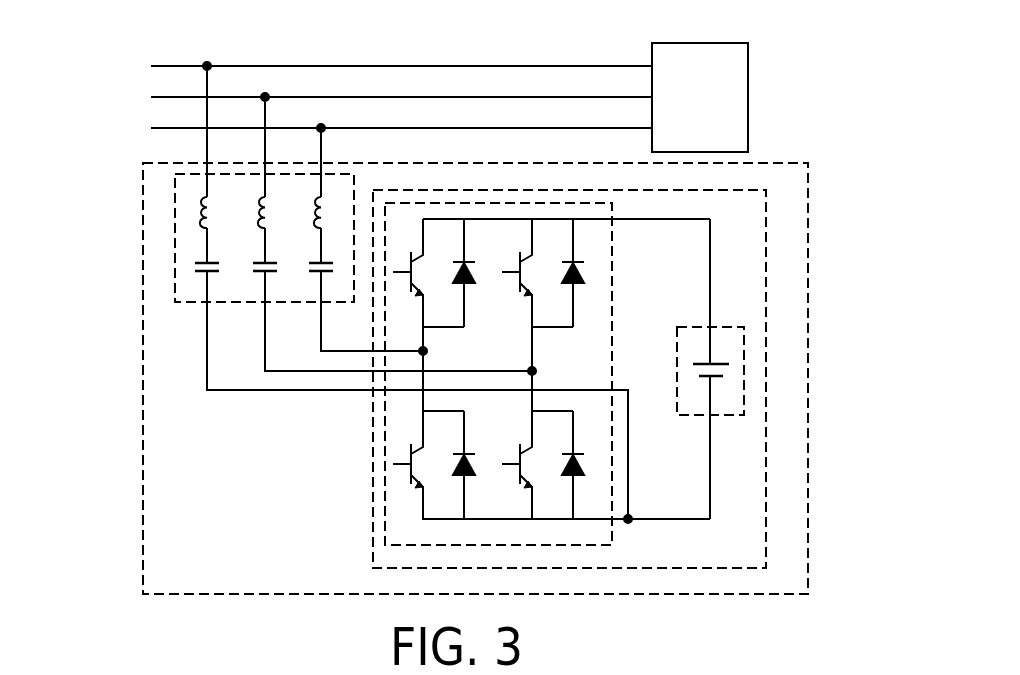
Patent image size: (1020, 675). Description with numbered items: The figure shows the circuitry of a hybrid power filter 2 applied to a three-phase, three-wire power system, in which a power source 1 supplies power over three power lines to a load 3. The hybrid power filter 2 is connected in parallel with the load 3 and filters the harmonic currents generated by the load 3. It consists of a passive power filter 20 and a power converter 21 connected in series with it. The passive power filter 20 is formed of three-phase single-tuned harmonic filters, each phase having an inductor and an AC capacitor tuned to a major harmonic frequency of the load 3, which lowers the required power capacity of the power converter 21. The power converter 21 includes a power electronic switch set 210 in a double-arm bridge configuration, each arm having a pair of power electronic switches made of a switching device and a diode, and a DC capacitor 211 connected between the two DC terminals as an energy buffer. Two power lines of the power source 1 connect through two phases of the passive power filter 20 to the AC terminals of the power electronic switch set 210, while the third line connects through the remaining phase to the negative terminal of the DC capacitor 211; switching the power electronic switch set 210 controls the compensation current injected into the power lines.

The power source 1 is at (122, 68).
The hybrid power filter 2 is at (800, 527).
The load 3 is at (749, 93).
The passive power filter 20 is at (181, 283).
The power converter 21 is at (764, 455).
The power electronic switch set 210 is at (386, 485).
The DC capacitor 211 is at (731, 345).